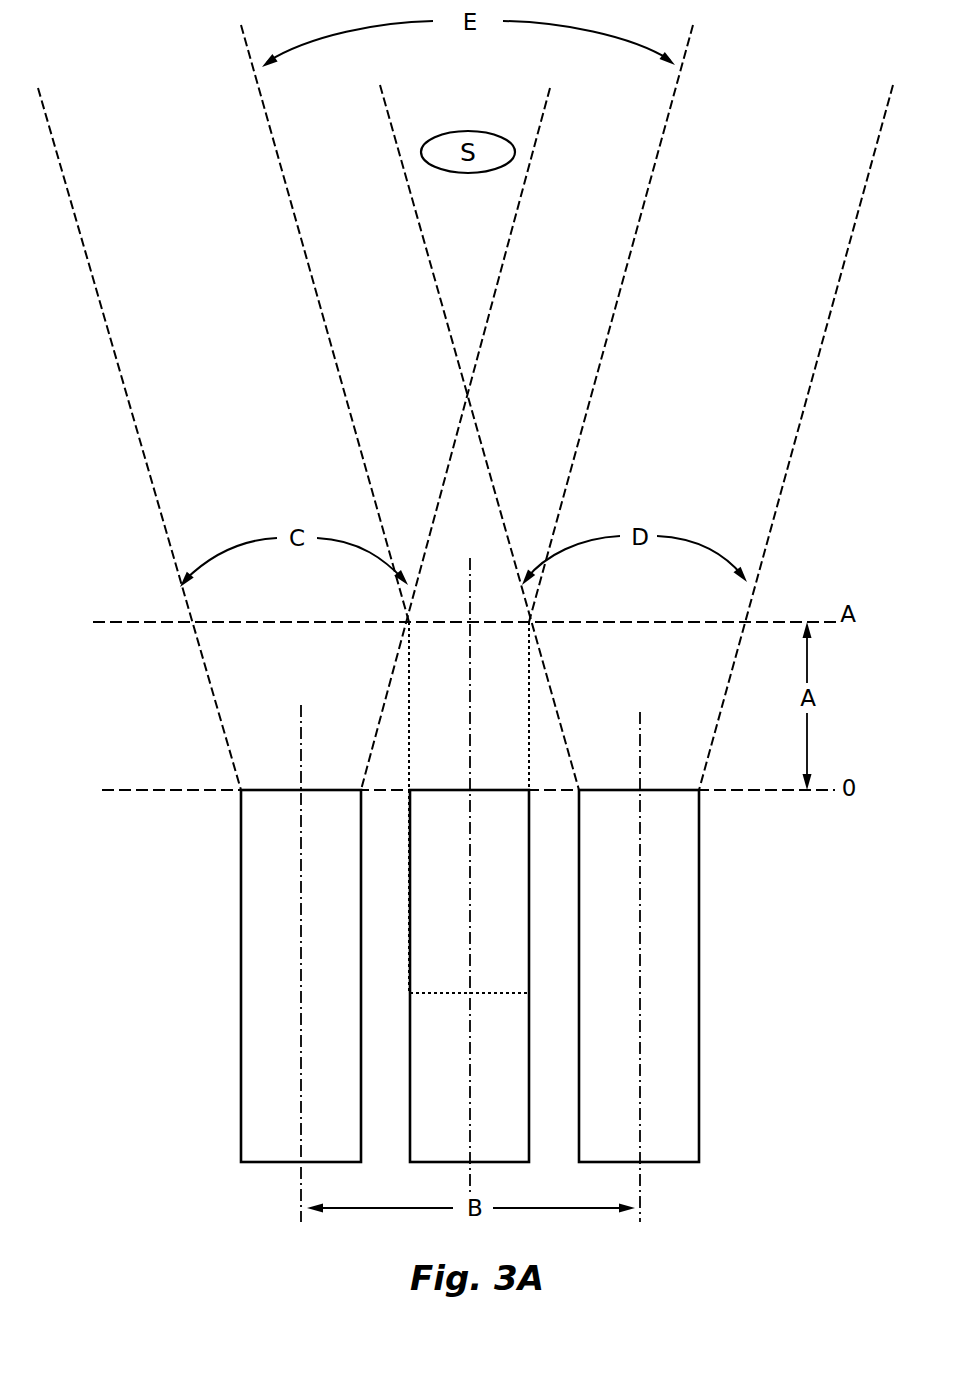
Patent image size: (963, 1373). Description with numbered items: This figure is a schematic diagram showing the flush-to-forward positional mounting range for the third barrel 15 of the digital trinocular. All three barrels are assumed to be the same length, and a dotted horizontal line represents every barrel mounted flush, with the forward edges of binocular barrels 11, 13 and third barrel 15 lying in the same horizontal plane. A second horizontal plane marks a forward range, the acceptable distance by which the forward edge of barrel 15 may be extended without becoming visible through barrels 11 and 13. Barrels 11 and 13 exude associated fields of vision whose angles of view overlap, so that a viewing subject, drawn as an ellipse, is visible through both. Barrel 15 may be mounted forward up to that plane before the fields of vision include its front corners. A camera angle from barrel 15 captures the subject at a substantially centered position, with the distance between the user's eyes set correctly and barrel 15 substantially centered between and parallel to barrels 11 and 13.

The binocular barrel 11 is at (241, 962).
The binocular barrel 13 is at (699, 952).
The third barrel 15 is at (529, 883).